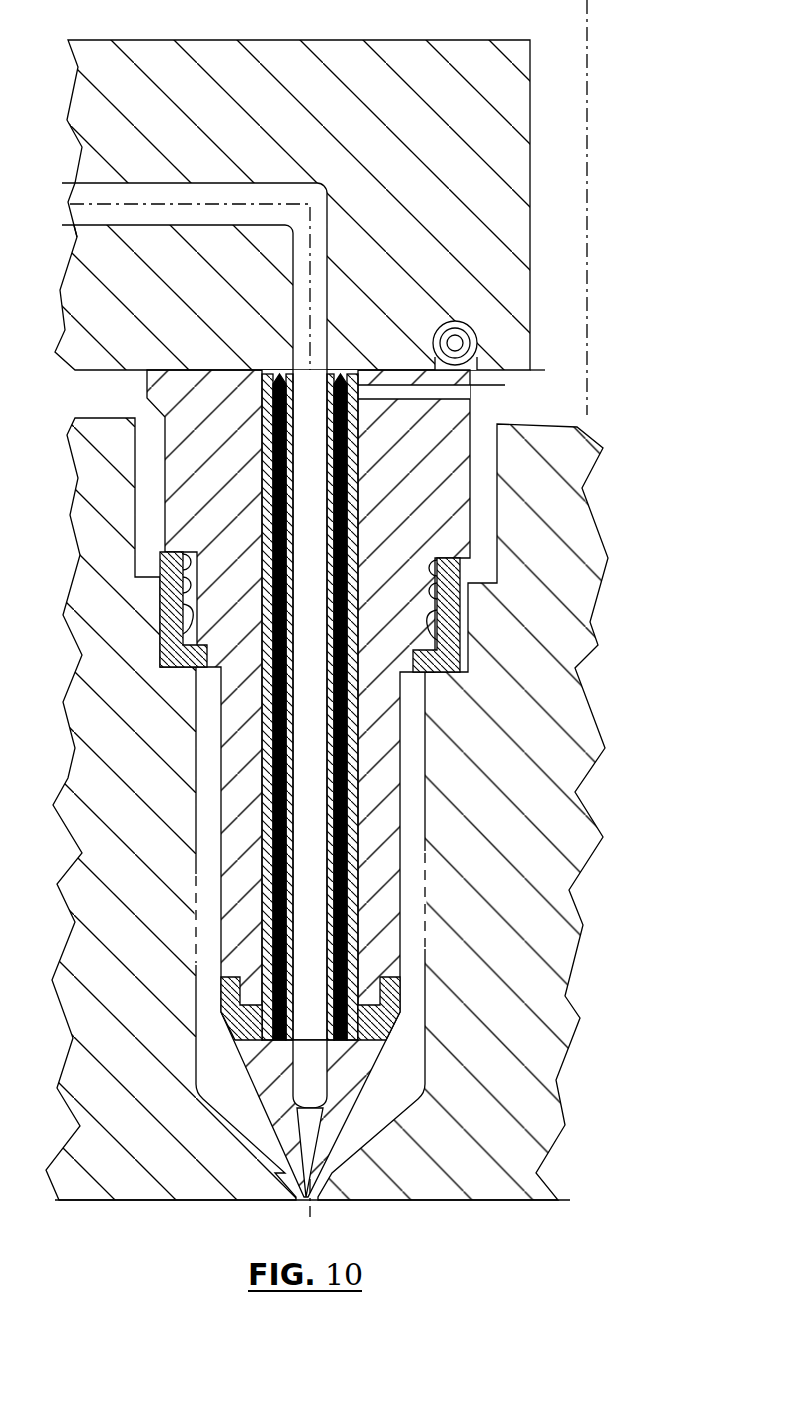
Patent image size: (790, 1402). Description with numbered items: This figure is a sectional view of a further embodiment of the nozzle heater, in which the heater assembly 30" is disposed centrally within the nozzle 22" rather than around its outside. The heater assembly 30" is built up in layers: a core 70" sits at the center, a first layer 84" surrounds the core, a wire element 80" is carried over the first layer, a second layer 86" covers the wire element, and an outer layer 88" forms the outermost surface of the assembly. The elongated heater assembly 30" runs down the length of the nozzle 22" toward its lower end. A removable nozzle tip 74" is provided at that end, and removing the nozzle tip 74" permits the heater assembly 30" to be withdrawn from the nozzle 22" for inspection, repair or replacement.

The nozzle 22 is at (380, 927).
The heater assembly 30 is at (347, 743).
The core 70 is at (347, 800).
The wire element 80 is at (350, 828).
The first layer 84 is at (357, 855).
The second layer 86 is at (367, 883).
The outer layer 88 is at (357, 950).
The removable nozzle tip 74 is at (390, 1032).